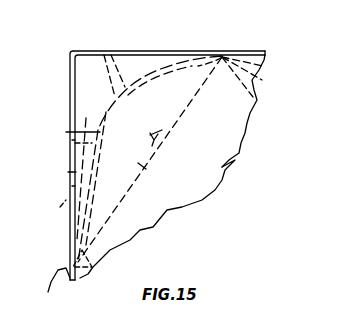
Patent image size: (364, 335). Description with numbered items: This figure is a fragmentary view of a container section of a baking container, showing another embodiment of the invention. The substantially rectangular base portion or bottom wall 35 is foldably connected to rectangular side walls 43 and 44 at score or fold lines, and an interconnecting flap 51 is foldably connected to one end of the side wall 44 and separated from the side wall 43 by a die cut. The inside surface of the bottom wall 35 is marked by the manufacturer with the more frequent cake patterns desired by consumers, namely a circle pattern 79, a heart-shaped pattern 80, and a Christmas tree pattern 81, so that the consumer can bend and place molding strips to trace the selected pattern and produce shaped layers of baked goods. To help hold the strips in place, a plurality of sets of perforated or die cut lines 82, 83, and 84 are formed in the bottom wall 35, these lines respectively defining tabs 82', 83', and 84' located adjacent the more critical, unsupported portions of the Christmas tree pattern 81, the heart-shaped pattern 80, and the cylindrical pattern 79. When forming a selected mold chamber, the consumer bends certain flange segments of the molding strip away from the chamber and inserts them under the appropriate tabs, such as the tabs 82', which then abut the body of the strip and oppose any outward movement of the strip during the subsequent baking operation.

The interconnecting flap 51 is at (68, 72).
The side wall 44 is at (255, 55).
The base portion or bottom wall 35 is at (230, 133).
The side wall 43 is at (48, 292).
The Christmas tree pattern 81 is at (222, 57).
The perforated or die cut lines 84 is at (99, 147).
The tab 84' is at (150, 140).
The perforated or die cut lines 83 is at (61, 145).
The tab 83' is at (65, 120).
The circle pattern 79 is at (68, 172).
The heart-shaped pattern 80 is at (60, 207).
The perforated or die cut lines 82 is at (174, 147).
The tab 82' is at (166, 179).